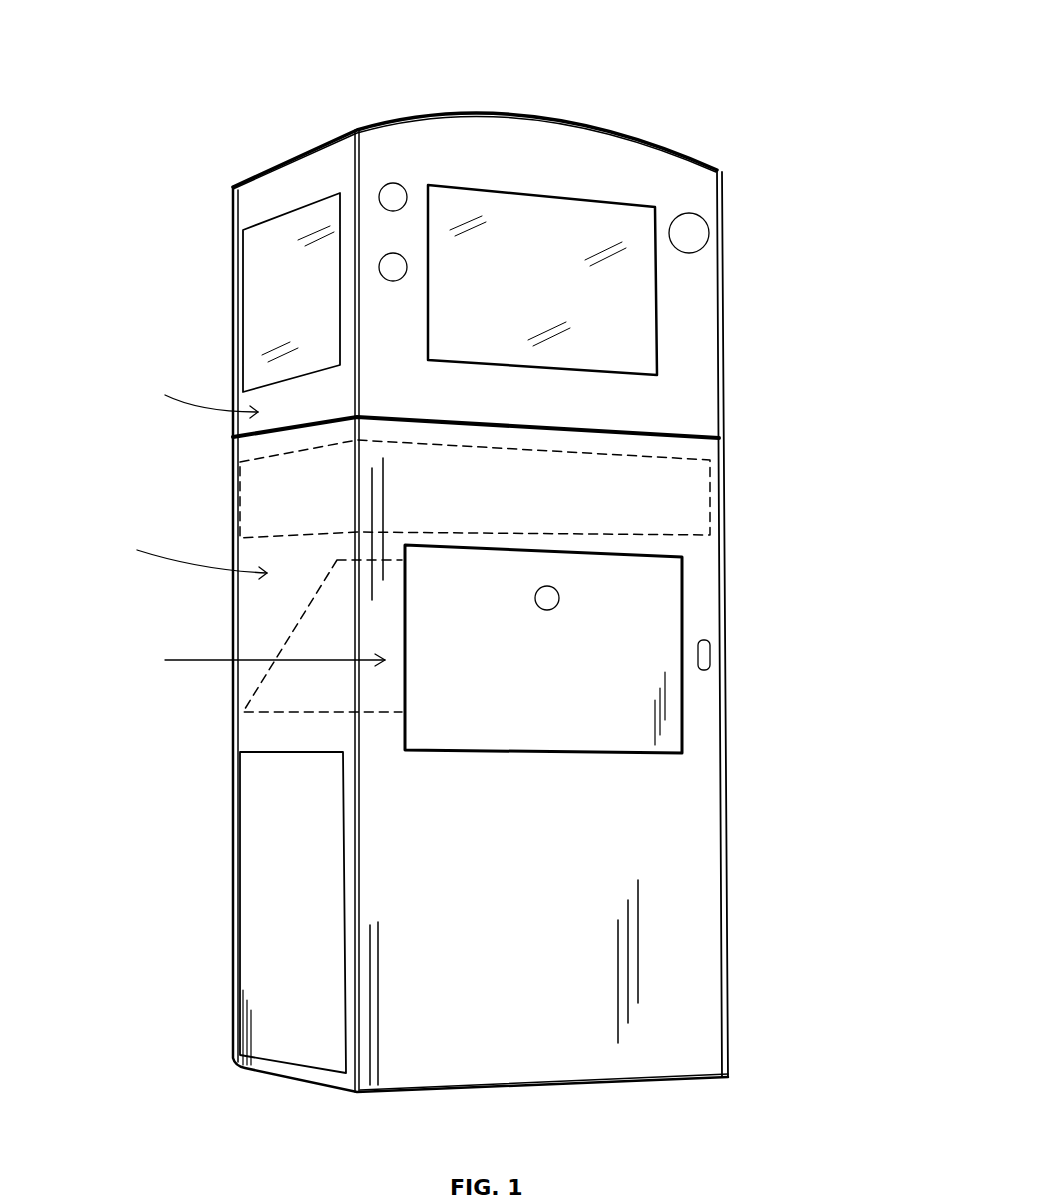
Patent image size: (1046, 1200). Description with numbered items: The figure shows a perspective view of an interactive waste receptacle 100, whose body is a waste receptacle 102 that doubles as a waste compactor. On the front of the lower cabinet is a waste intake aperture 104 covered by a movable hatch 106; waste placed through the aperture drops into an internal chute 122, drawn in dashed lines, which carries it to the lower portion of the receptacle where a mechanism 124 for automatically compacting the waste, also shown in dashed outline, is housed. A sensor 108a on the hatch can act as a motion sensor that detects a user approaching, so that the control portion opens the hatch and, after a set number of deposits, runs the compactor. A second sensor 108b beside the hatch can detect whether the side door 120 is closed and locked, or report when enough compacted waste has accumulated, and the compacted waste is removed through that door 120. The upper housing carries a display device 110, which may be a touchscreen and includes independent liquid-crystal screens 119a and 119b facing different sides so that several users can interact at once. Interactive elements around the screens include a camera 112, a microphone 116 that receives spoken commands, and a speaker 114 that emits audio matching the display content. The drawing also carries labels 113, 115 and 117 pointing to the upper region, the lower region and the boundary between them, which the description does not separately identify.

The interactive waste receptacle 100 is at (752, 91).
The waste receptacle 102 is at (433, 855).
The waste intake aperture 104 is at (251, 660).
The movable hatch 106 is at (633, 617).
The sensor 108a is at (547, 598).
The sensor 108b is at (710, 652).
The display device 110 is at (495, 207).
The camera 112 is at (393, 267).
The upper portion 113 is at (184, 398).
The speaker 114 is at (689, 233).
The lower portion 115 is at (173, 557).
The microphone 116 is at (393, 197).
The divider 117 is at (237, 440).
The liquid-crystal display device screen 119a is at (642, 290).
The liquid-crystal display device screen 119b is at (260, 243).
The door 120 is at (258, 940).
The internal chute 122 is at (285, 643).
The mechanism for automatically compacting the waste 124 is at (258, 493).